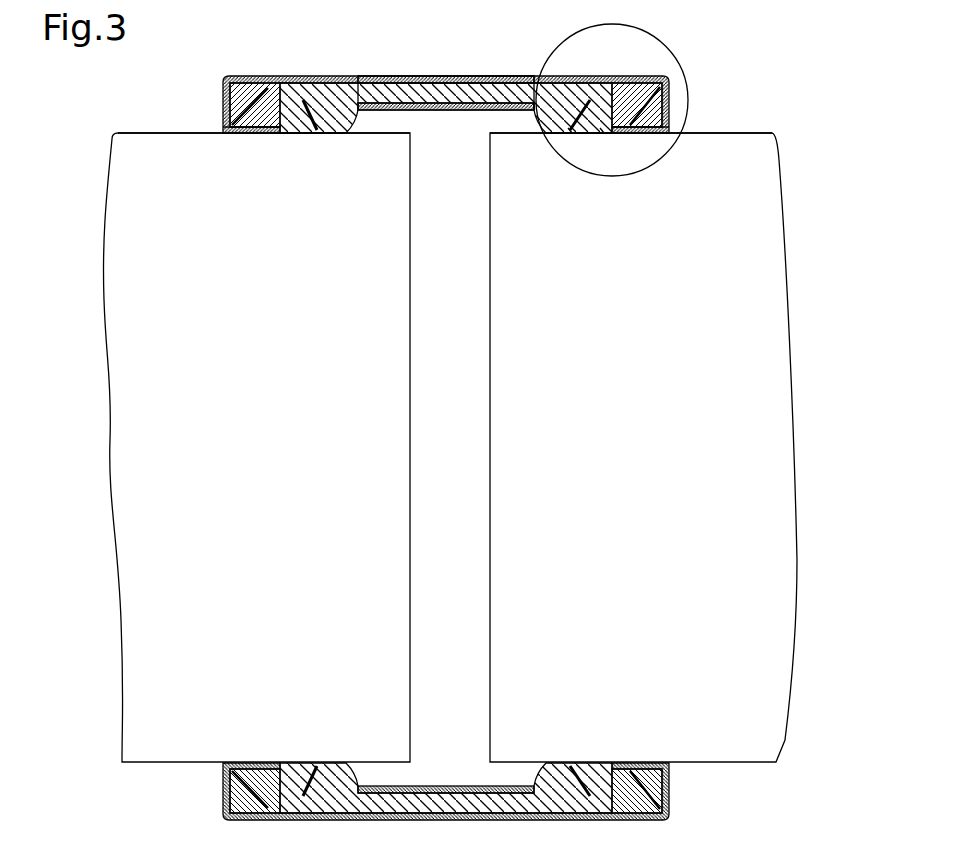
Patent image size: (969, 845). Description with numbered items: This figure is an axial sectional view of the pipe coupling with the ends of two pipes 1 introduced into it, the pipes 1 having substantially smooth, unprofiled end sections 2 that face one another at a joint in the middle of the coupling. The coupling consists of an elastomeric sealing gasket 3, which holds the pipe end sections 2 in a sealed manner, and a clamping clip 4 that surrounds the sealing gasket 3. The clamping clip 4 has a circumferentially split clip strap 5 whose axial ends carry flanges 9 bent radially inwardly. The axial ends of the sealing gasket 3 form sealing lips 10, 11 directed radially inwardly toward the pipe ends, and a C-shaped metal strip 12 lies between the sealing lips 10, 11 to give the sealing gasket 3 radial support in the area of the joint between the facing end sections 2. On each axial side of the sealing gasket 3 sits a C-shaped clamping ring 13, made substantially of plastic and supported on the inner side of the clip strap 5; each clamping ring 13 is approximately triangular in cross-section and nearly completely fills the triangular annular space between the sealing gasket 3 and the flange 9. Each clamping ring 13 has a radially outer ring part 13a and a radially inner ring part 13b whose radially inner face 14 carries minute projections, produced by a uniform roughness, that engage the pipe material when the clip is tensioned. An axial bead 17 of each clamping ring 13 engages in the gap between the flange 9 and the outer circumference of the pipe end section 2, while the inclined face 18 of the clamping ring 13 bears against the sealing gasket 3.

The pipe 1 is at (89, 135).
The end section 2 is at (183, 133).
The sealing gasket 3 is at (477, 72).
The clamping clip 4 is at (509, 72).
The clip strap 5 is at (409, 76).
The flange 9 is at (224, 102).
The sealing lip 10 is at (304, 116).
The sealing lip 11 is at (563, 130).
The metal strip 12 is at (436, 112).
The clamping ring 13 is at (258, 97).
The radially outer ring part 13a is at (255, 132).
The radially inner ring part 13b is at (222, 130).
The radially inner face 14 is at (253, 133).
The axial bead 17 is at (222, 123).
The face 18 is at (268, 98).